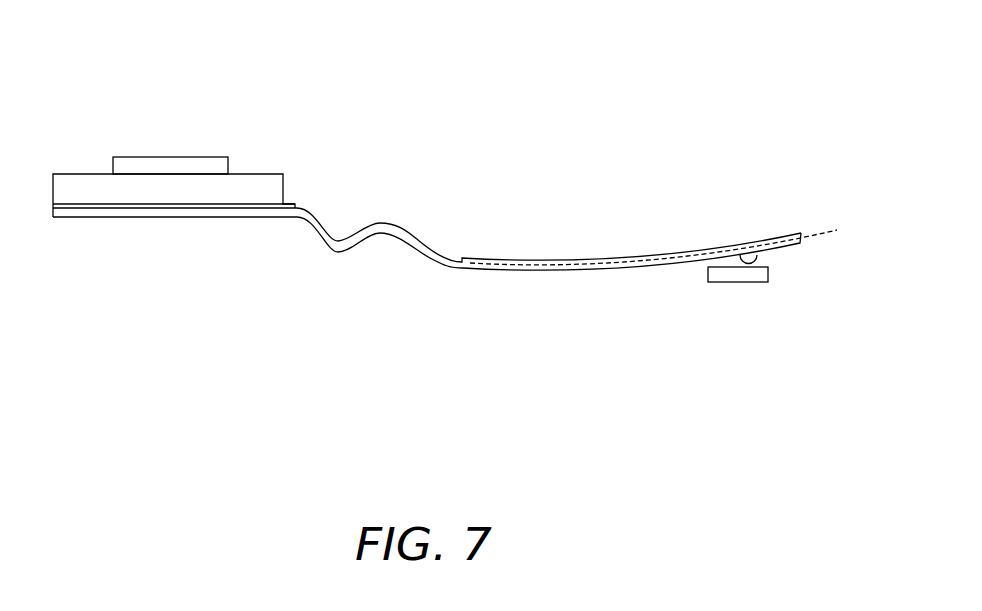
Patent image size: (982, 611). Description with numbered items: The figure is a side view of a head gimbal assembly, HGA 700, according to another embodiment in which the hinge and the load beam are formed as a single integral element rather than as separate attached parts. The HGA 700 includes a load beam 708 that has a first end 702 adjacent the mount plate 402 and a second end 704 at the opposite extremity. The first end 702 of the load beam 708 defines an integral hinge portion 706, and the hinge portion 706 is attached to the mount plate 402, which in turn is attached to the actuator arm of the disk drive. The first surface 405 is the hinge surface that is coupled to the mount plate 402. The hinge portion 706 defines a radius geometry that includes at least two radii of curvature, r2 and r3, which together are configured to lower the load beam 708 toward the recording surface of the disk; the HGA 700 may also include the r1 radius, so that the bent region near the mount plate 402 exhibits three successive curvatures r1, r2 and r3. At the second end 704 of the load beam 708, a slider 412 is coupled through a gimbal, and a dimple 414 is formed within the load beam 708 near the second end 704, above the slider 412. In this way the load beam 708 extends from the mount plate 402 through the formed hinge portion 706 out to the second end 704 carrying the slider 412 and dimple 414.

The HGA 700 is at (95, 305).
The mount plate 402 is at (77, 186).
The first surface 405 is at (174, 165).
The load beam 708 is at (218, 210).
The first end 702 is at (354, 313).
The second end 704 is at (752, 335).
The hinge portion 706 is at (430, 383).
The slider 412 is at (727, 279).
The dimple 414 is at (758, 259).
The r1 radius r1 is at (310, 227).
The radius of curvature r2 is at (341, 234).
The radius of curvature r3 is at (384, 242).